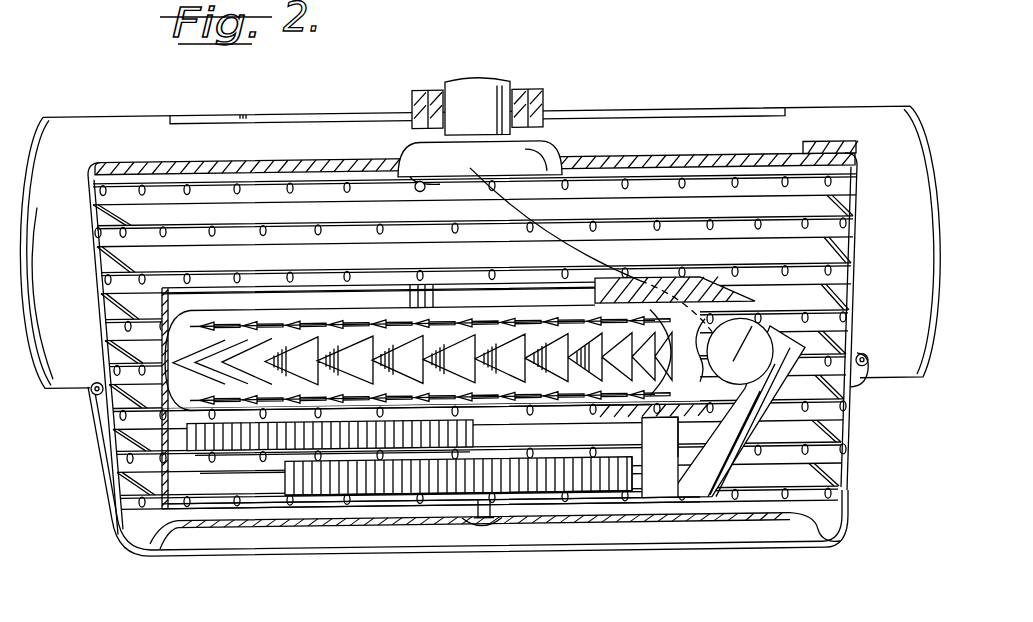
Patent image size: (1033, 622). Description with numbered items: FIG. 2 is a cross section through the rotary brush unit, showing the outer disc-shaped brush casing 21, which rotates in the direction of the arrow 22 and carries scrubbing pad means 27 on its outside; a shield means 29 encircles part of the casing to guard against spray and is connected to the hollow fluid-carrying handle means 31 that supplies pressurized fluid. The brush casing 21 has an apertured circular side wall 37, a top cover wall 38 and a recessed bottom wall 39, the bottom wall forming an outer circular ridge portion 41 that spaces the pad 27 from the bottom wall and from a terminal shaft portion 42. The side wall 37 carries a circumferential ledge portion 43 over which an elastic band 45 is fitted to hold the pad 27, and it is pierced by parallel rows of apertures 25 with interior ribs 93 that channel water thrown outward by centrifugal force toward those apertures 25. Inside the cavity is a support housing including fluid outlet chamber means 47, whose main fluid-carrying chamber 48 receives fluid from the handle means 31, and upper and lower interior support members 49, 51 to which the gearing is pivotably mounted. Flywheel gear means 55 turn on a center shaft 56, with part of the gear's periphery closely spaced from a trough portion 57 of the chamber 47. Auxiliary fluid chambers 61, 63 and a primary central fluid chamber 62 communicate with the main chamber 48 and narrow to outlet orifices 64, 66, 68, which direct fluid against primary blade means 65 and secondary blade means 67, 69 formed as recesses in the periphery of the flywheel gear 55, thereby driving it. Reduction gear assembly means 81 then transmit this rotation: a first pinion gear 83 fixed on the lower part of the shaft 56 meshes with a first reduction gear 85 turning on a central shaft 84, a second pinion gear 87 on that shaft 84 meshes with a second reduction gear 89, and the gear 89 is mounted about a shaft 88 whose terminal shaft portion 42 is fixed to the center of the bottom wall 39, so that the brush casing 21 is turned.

The brush casing 21 is at (813, 148).
The arrow 22 is at (786, 2).
The apertures 25 is at (688, 182).
The scrubbing pad means 27 is at (727, 547).
The shield means 29 is at (722, 127).
The hollow fluid-carrying handle means 31 is at (470, 90).
The apertured circular side wall 37 is at (90, 212).
The top cover wall 38 is at (228, 138).
The recessed bottom wall 39 is at (552, 517).
The outer circular ridge portion 41 is at (847, 519).
The terminal shaft portion 42 is at (487, 524).
The circumferential ledge portion 43 is at (96, 392).
The elastic band 45 is at (870, 364).
The fluid outlet chamber means 47 is at (716, 262).
The main fluid-carrying chamber 48 is at (783, 322).
The upper interior support member 49 is at (398, 258).
The lower interior support member 51 is at (257, 504).
The flywheel gear means 55 is at (248, 338).
The center shaft 56 is at (434, 286).
The trough portion 57 is at (604, 424).
The auxiliary fluid chamber 61 is at (720, 322).
The primary central fluid chamber 62 is at (740, 351).
The auxiliary fluid chamber 63 is at (660, 457).
The outlet orifice 64 is at (668, 305).
The primary blade means 65 is at (342, 350).
The outlet orifice 66 is at (740, 351).
The secondary blade means 67 is at (542, 319).
The outlet orifice 68 is at (660, 437).
The secondary blade means 69 is at (548, 410).
The reduction gear assembly means 81 is at (233, 476).
The first pinion gear 83 is at (474, 435).
The central shaft 84 is at (318, 462).
The first reduction gear 85 is at (240, 450).
The second pinion gear 87 is at (310, 487).
The shaft 88 is at (465, 517).
The second reduction gear 89 is at (622, 486).
The interior ribs 93 is at (876, 250).